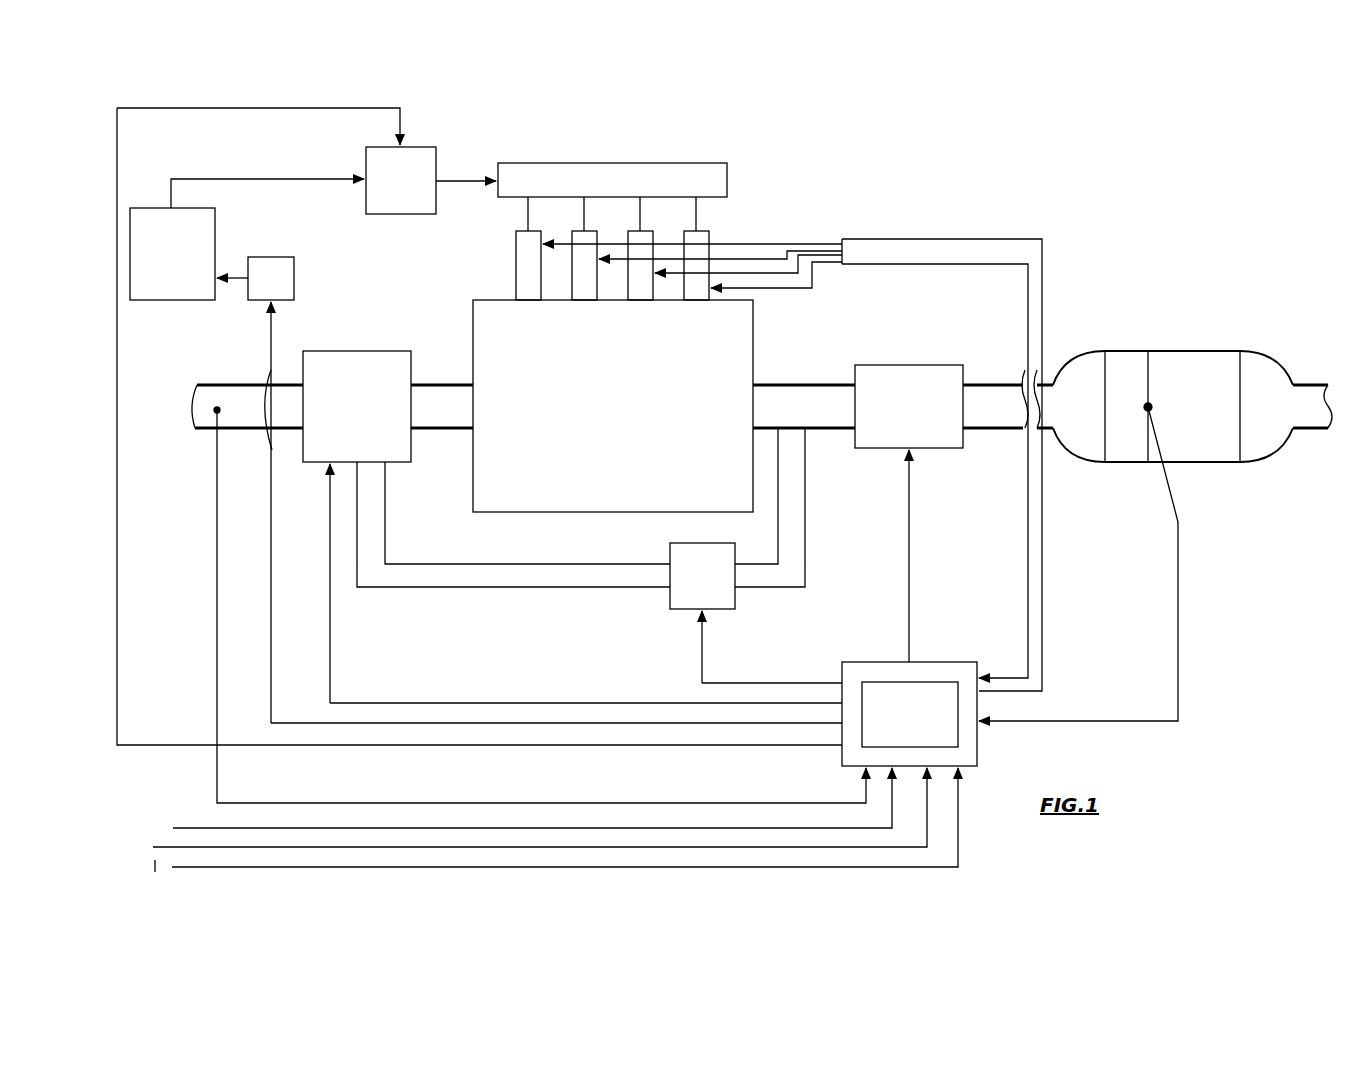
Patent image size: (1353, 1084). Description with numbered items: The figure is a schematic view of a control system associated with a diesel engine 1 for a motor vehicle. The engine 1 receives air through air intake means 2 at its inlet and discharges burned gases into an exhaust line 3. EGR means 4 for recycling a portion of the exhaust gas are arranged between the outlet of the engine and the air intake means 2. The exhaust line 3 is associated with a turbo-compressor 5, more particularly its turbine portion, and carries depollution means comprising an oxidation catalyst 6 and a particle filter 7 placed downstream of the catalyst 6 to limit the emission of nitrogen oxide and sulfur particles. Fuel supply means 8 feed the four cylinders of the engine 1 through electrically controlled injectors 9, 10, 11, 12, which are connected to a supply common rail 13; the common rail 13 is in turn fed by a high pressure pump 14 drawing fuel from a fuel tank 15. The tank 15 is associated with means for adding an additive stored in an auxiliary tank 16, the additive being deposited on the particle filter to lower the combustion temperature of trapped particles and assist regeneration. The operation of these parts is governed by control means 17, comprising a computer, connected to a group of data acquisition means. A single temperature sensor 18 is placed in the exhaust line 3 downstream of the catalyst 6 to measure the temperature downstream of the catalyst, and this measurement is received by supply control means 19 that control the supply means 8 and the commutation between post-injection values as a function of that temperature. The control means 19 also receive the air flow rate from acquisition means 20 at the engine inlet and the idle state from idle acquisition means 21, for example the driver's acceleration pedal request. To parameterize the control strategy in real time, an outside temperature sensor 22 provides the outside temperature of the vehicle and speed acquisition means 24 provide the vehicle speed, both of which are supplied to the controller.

The diesel engine 1 is at (613, 406).
The air intake means 2 is at (358, 346).
The exhaust line 3 is at (870, 353).
The EGR means 4 is at (668, 612).
The turbo-compressor 5 is at (928, 362).
The oxidation catalyst 6 is at (1137, 352).
The particle filter 7 is at (1222, 353).
The fuel supply means 8 is at (462, 146).
The injector 9 is at (538, 223).
The injector 10 is at (594, 221).
The injector 11 is at (647, 219).
The injector 12 is at (714, 223).
The supply common rail 13 is at (529, 162).
The high pressure pump 14 is at (426, 136).
The fuel tank 15 is at (174, 305).
The auxiliary tank 16 is at (278, 256).
The control means 17 is at (838, 765).
The temperature sensor 18 is at (1160, 406).
The supply control means 19 is at (910, 715).
The air flow rate acquisition means 20 is at (217, 406).
The idle acquisition means 21 is at (257, 868).
The external temperature sensor 22 is at (198, 826).
The speed acquisition means 24 is at (204, 870).